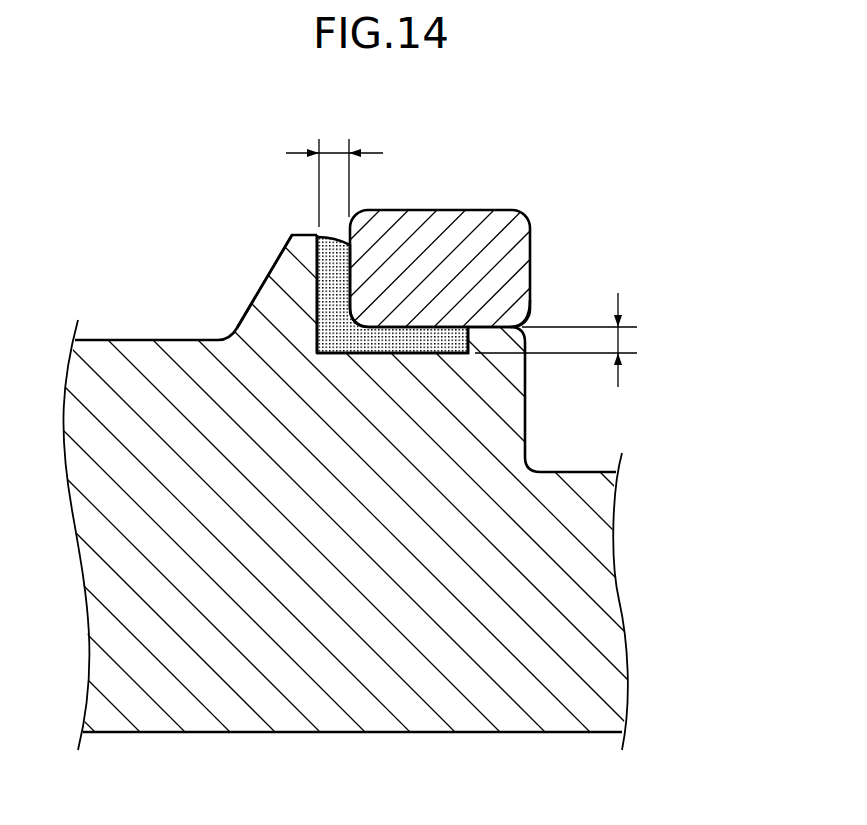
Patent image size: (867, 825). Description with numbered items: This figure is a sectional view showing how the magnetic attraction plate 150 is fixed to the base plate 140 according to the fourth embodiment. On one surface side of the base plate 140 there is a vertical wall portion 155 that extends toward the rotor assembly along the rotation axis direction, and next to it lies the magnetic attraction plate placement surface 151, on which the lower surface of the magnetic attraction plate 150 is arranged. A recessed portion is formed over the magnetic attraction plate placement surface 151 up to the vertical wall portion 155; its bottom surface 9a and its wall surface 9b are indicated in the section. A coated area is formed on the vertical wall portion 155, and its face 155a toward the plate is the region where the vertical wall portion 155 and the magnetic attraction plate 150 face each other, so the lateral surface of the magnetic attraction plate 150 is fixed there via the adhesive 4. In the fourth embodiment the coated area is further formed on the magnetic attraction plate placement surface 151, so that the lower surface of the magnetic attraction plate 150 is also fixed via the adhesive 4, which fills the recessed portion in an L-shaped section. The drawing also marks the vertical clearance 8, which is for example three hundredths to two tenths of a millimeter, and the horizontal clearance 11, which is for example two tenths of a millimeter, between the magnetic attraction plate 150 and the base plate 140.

The base plate 140 is at (194, 720).
The vertical wall portion 155 is at (278, 302).
The side face of protrusion 155a is at (318, 310).
The bottom surface 9a is at (423, 357).
The wall surface 9b is at (280, 262).
The adhesive 4 is at (388, 338).
The magnetic attraction plate 150 is at (470, 223).
The magnetic attraction plate placement surface 151 is at (487, 320).
The horizontal clearance 11 is at (333, 153).
The vertical clearance 8 is at (618, 340).